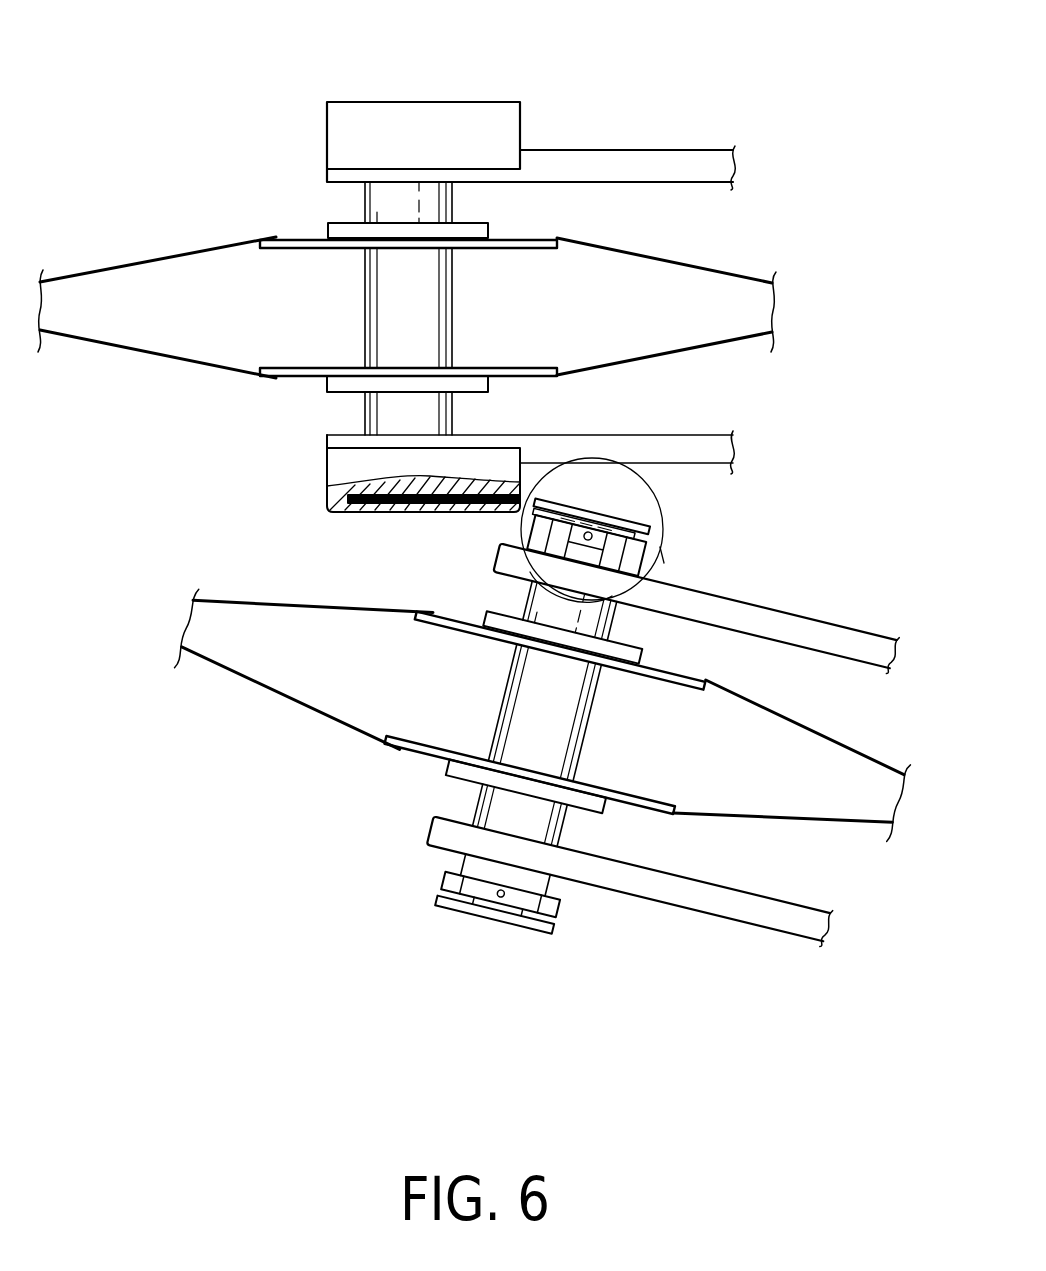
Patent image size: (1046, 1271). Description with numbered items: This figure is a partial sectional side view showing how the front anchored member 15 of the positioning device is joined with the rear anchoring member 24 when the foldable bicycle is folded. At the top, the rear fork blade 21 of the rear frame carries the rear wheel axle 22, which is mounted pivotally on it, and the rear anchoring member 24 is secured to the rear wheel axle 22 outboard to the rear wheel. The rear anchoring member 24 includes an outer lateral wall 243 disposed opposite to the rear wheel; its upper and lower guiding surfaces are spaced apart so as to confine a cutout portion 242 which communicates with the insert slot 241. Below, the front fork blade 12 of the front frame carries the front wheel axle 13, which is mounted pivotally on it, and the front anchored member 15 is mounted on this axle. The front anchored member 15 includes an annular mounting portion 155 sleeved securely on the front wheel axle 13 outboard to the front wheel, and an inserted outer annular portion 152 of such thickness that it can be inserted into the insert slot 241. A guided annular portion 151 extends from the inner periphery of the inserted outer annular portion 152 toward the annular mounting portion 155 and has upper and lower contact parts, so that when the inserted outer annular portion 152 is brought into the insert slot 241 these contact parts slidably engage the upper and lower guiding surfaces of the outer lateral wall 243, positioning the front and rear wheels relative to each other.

The front fork blade 12 is at (662, 744).
The front wheel axle 13 is at (533, 755).
The front anchored member 15 is at (585, 542).
The guided annular portion 151 is at (532, 571).
The inserted outer annular portion 152 is at (591, 516).
The annular mounting portion 155 is at (632, 542).
The rear fork blade 21 is at (649, 160).
The rear wheel axle 22 is at (382, 409).
The rear anchoring member 24 is at (332, 492).
The insert slot 241 is at (383, 503).
The cutout portion 242 is at (585, 478).
The outer lateral wall 243 is at (429, 506).